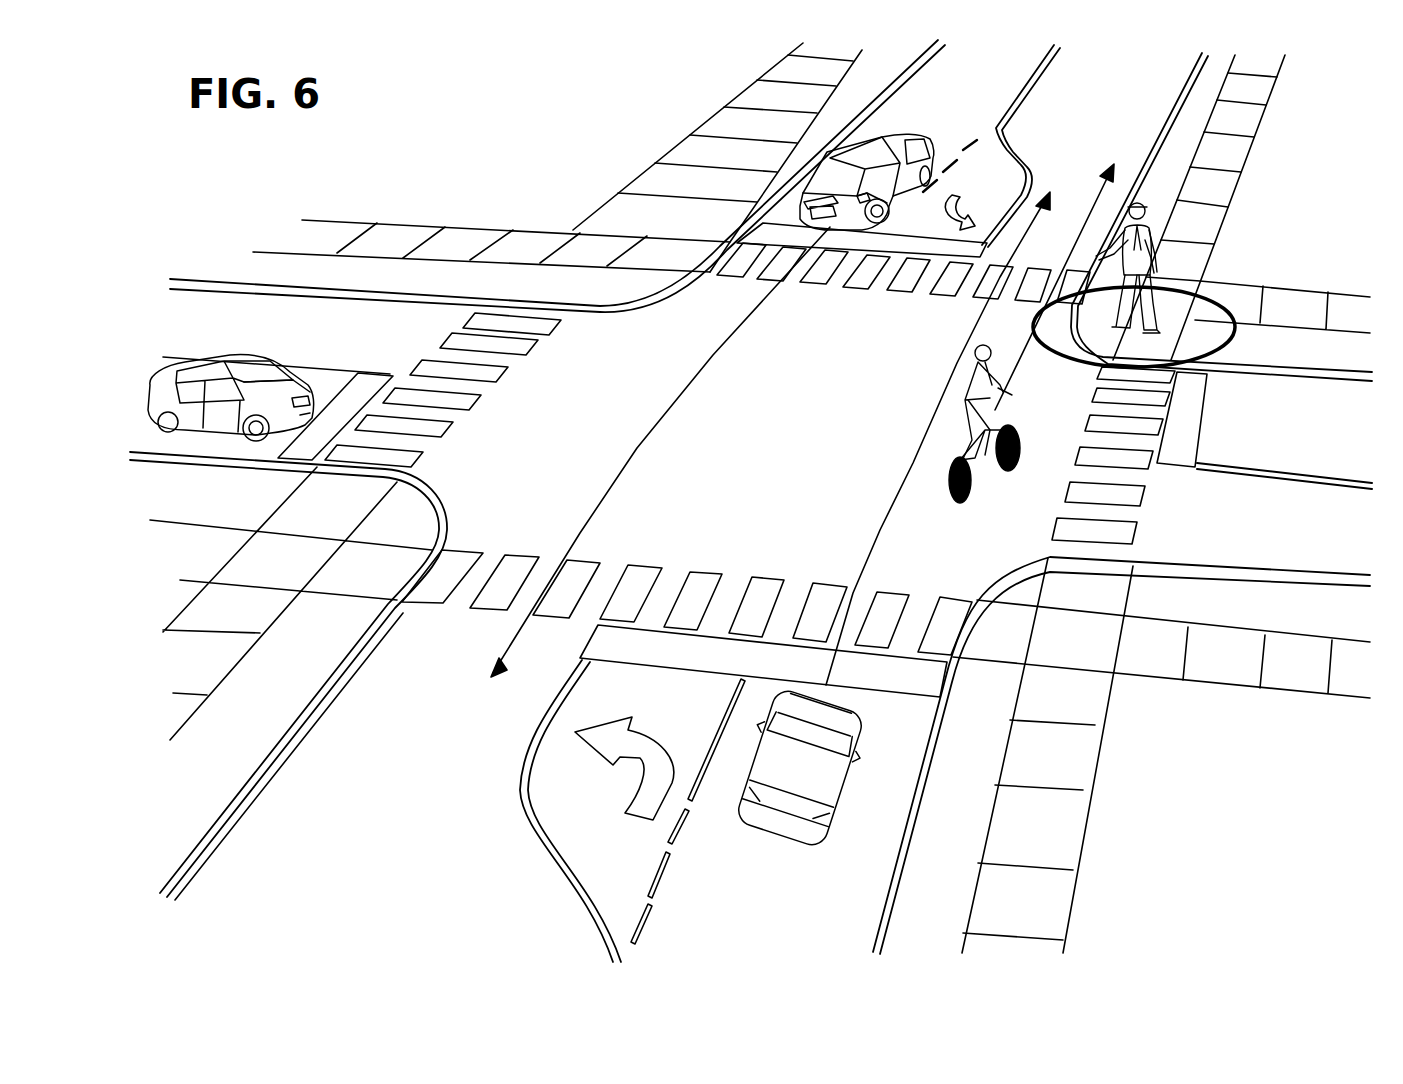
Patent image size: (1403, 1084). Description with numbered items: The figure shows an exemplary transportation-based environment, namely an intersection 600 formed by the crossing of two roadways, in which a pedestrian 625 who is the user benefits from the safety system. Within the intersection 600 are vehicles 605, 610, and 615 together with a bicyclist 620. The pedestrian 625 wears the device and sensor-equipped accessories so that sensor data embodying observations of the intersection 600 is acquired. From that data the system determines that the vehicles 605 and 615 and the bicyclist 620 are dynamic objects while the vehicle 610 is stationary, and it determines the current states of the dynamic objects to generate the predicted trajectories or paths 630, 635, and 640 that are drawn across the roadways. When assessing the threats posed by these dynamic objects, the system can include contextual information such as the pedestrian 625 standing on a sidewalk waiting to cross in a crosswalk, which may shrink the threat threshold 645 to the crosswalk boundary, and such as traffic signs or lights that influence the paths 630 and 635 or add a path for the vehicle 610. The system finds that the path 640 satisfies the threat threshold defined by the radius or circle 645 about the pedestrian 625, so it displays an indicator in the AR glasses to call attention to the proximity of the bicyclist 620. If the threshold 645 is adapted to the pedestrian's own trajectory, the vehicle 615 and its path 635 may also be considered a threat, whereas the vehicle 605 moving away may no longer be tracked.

The intersection 600 is at (552, 132).
The vehicle 605 is at (905, 135).
The vehicle 610 is at (232, 362).
The vehicle 615 is at (782, 825).
The bicyclist 620 is at (968, 362).
The pedestrian 625 is at (1150, 226).
The predicted trajectory/path 630 is at (637, 448).
The predicted trajectory/path 635 is at (902, 465).
The predicted trajectory/path 640 is at (1102, 172).
The threat threshold 645 is at (1228, 340).